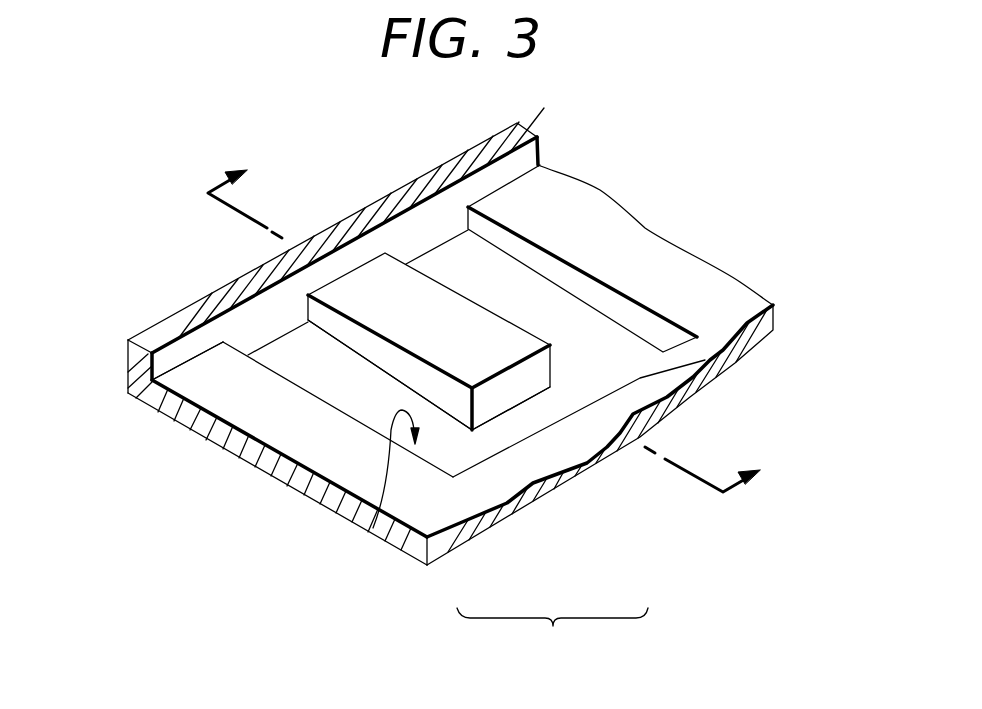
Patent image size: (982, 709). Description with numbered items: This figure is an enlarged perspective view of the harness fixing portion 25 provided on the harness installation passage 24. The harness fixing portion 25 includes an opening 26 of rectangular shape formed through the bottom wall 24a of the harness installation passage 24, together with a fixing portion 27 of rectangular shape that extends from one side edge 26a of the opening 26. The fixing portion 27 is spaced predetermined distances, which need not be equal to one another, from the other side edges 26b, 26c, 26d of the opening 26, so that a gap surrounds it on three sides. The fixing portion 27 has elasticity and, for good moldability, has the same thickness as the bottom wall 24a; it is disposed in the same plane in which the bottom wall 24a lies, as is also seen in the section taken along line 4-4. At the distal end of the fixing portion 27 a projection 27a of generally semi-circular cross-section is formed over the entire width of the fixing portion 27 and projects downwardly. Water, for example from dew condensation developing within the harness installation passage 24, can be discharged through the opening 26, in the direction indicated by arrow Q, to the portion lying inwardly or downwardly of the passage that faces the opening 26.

The section line 4- 4 is at (492, 323).
The harness installation passage 24 is at (236, 312).
The bottom wall 24a is at (347, 458).
The harness fixing portion 25 is at (552, 632).
The opening 26 is at (573, 387).
The one side edge 26a is at (253, 340).
The other side edge 26b is at (228, 443).
The other side edge 26c is at (632, 372).
The other side edge 26d is at (578, 274).
The fixing portion 27 is at (433, 353).
The projection 27a is at (442, 397).
The arrow Q is at (373, 528).